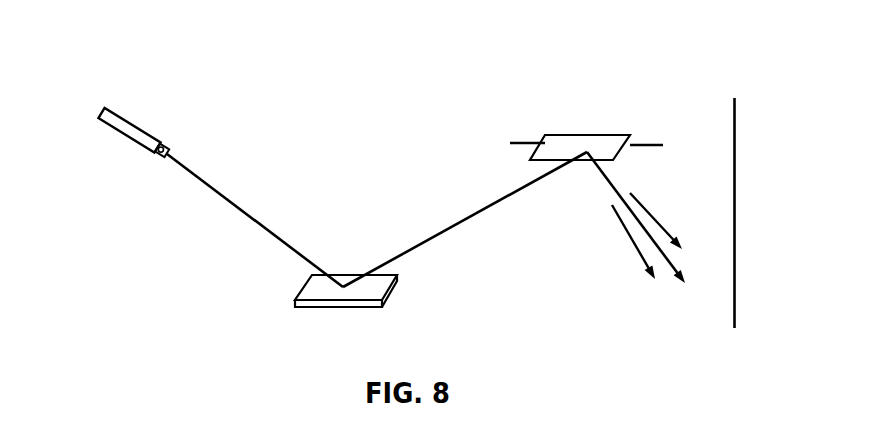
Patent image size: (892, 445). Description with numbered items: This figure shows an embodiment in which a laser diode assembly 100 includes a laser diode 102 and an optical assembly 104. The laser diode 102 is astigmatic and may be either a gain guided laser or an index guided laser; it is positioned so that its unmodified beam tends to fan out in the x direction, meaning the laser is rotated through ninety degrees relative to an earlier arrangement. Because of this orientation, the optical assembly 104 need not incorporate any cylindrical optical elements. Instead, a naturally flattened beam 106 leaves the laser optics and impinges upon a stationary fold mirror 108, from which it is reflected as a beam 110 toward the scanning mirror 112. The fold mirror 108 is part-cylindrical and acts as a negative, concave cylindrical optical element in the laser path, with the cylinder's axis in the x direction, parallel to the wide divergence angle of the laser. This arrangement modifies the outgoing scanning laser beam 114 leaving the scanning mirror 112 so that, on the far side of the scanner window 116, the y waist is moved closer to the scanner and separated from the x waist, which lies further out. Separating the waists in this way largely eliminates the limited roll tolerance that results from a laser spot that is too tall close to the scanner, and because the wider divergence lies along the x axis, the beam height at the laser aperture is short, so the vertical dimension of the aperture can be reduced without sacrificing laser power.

The laser diode assembly 100 is at (136, 54).
The laser diode 102 is at (144, 114).
The optical assembly 104 is at (197, 131).
The naturally flattened beam 106 is at (255, 220).
The stationary fold mirror 108 is at (347, 315).
The reflected beam 110 is at (465, 219).
The scanning mirror 112 is at (586, 128).
The outgoing scanning laser beam 114 is at (618, 217).
The scanner window 116 is at (777, 213).